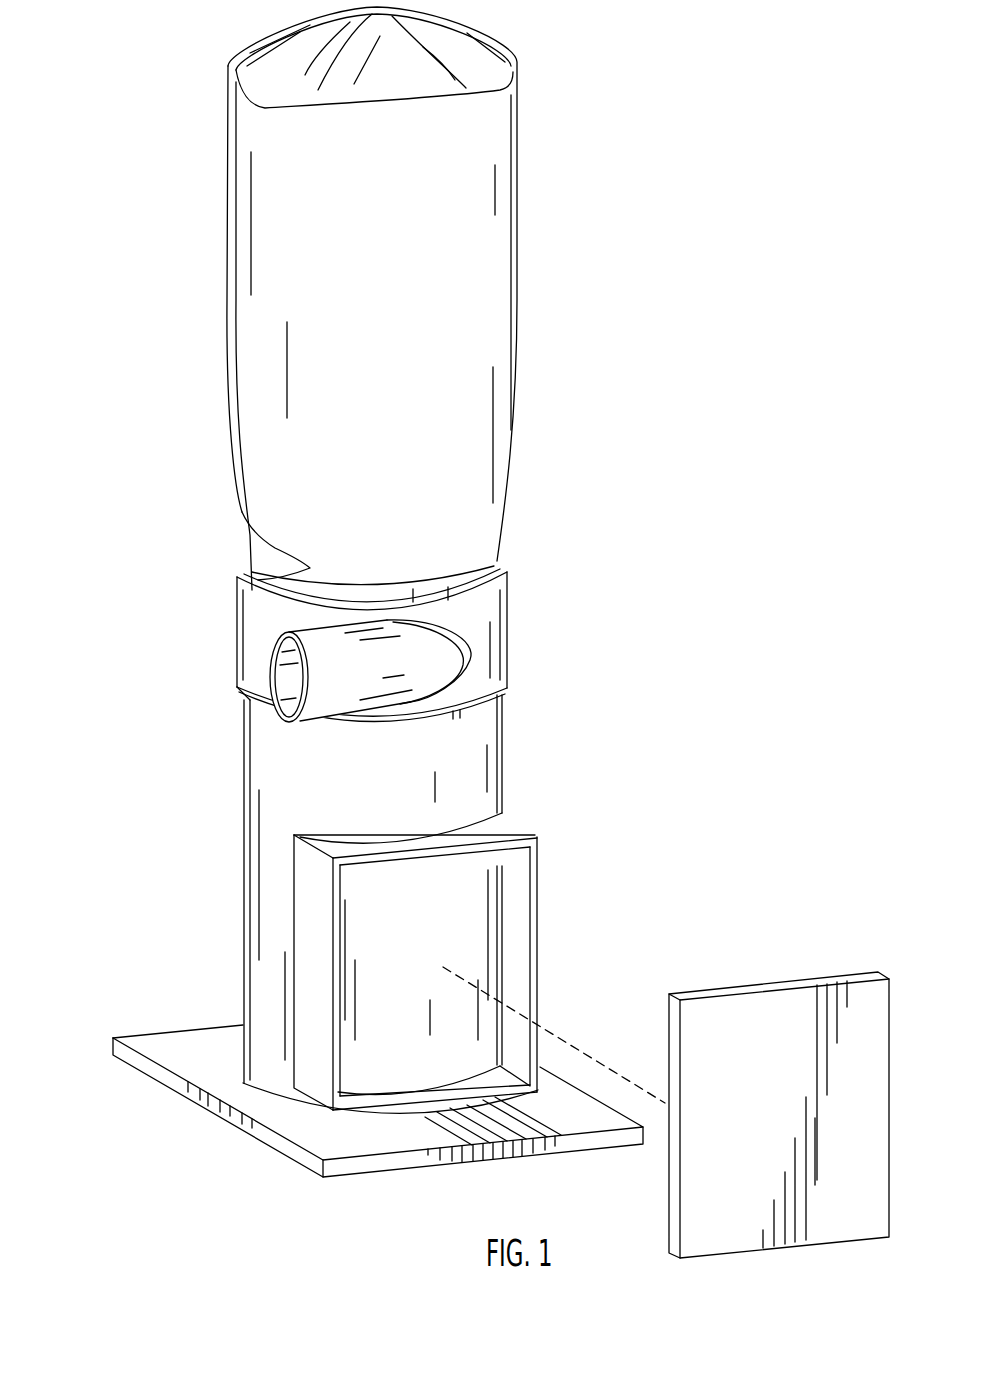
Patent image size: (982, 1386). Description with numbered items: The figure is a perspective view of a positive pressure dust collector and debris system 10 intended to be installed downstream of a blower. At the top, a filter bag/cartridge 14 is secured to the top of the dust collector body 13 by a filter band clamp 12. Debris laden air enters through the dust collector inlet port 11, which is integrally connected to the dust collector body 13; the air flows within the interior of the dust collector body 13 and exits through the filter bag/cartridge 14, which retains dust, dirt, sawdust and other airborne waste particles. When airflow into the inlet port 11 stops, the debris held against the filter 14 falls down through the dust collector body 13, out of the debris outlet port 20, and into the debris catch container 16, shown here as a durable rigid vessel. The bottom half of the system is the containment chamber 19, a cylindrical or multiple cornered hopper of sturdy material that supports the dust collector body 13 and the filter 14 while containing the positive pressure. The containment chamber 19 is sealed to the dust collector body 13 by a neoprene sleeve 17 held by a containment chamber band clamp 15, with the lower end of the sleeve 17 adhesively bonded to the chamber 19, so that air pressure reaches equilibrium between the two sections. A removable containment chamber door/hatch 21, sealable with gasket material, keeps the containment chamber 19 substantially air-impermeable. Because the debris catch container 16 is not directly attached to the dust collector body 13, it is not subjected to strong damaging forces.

The positive pressure dust collector and debris system 10 is at (133, 13).
The dust collector inlet port 11 is at (327, 643).
The filter band clamp 12 is at (283, 583).
The dust collector body 13 is at (508, 635).
The filter bag/cartridge 14 is at (283, 262).
The containment chamber band clamp 15 is at (240, 698).
The debris catch container 16 is at (455, 912).
The neoprene sleeve 17 is at (505, 693).
The containment chamber 19 is at (282, 812).
The debris outlet port 20 is at (458, 713).
The removable containment chamber door/hatch 21 is at (780, 1008).